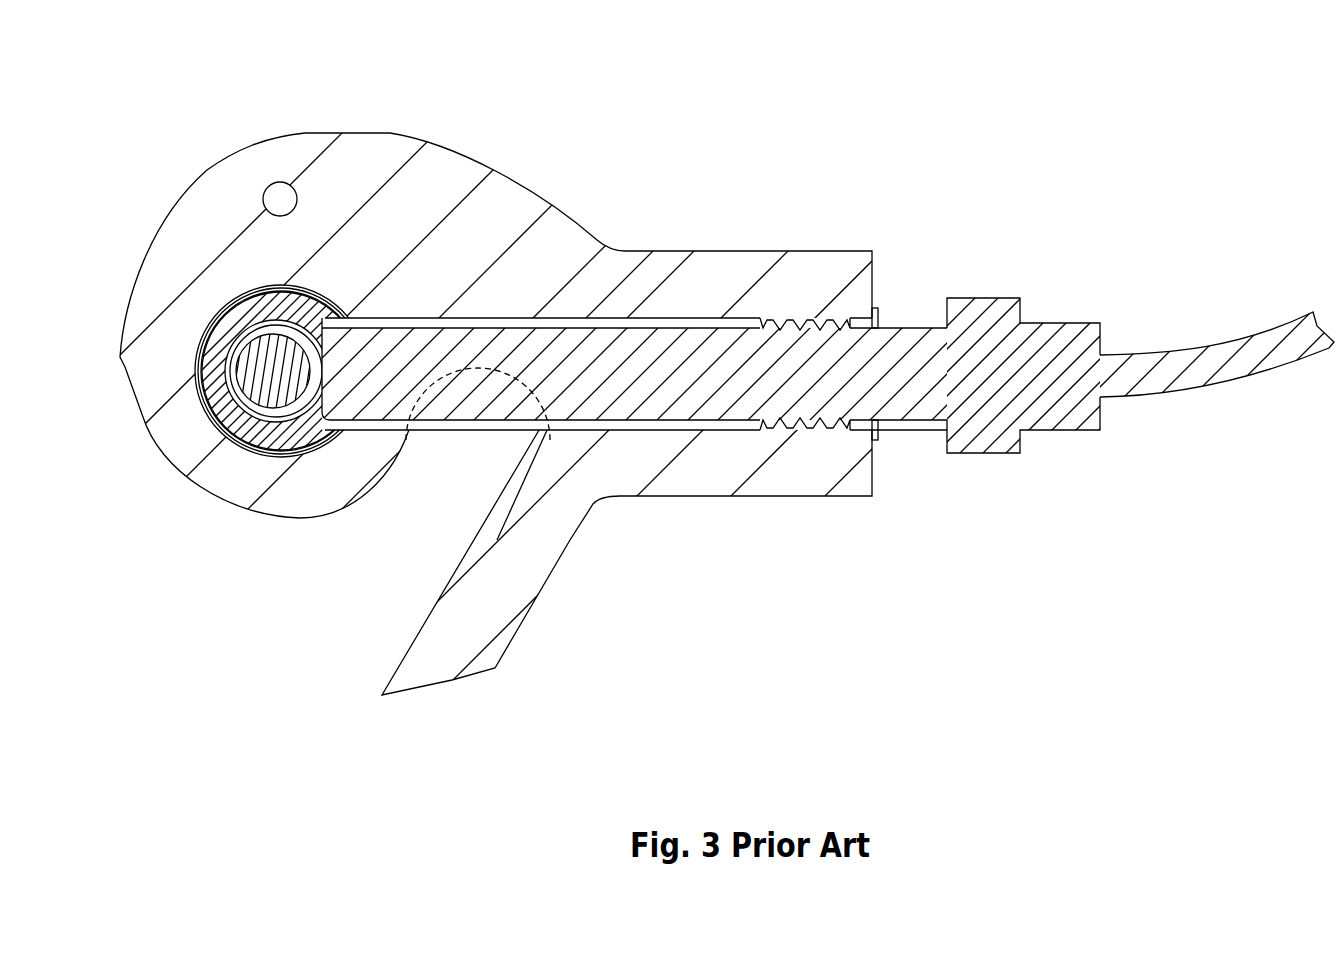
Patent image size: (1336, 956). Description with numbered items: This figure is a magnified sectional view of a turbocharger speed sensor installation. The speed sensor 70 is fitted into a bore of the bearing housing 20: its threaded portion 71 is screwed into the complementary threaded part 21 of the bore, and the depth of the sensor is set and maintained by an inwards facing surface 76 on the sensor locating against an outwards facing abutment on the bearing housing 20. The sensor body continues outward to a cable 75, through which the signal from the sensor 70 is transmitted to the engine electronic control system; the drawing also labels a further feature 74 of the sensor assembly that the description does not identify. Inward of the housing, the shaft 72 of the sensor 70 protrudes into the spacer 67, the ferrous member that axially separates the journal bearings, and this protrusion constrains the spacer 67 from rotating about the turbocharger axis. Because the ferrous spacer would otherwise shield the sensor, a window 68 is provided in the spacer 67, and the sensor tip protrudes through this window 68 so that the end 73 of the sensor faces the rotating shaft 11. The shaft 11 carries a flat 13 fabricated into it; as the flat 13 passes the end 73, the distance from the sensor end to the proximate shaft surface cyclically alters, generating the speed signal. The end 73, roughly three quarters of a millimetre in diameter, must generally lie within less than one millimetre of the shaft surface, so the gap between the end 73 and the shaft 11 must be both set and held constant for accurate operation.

The shaft 11 is at (252, 405).
The flat 13 is at (292, 385).
The bearing housing 20 is at (490, 228).
The threaded part 21 is at (822, 455).
The spacer 67 is at (222, 438).
The window 68 is at (319, 298).
The speed sensor 70 is at (590, 378).
The threaded portion 71 is at (800, 405).
The shaft of the sensor 72 is at (478, 437).
The end of the sensor 73 is at (337, 377).
The nut 74 is at (968, 285).
The cable 75 is at (1229, 362).
The inwards facing surface 76 is at (882, 432).